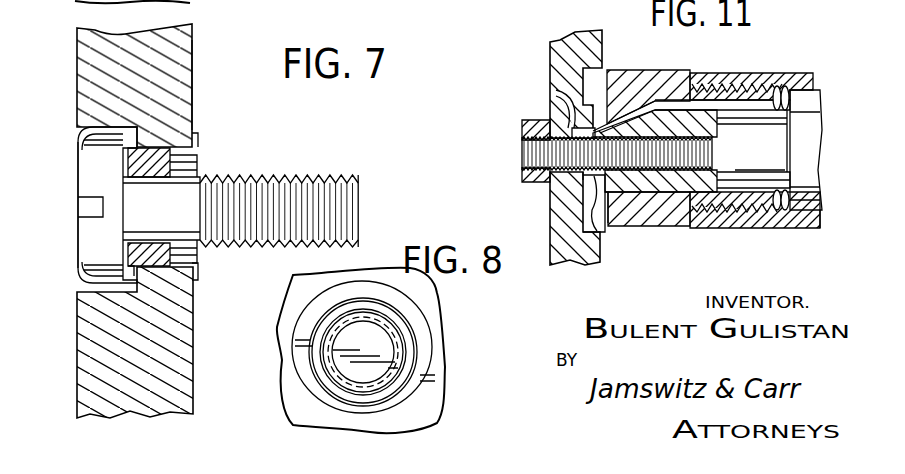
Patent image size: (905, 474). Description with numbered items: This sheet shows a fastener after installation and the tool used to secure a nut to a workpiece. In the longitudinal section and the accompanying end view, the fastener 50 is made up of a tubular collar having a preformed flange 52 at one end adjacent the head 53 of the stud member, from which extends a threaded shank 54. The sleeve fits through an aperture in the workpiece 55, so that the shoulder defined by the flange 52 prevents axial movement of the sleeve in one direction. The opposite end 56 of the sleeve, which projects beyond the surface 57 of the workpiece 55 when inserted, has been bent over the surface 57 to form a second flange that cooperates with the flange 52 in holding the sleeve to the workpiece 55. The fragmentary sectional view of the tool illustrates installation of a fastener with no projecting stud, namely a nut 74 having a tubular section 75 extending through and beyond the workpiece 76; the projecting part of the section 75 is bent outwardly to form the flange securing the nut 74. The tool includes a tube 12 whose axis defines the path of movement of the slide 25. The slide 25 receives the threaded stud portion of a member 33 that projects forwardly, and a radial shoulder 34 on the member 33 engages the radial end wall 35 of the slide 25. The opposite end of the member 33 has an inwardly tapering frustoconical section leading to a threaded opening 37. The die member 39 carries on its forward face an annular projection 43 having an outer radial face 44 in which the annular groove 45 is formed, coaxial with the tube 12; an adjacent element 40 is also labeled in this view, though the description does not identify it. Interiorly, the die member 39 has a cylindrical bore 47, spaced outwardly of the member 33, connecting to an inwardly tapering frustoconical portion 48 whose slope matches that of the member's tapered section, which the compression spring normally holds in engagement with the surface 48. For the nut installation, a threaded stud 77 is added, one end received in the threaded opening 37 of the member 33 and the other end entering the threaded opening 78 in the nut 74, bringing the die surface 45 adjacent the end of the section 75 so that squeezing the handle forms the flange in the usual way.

In FIG. 11, the tube 12 is at (822, 226).
In FIG. 11, the slide 25 is at (820, 136).
In FIG. 11, the member 33 is at (757, 192).
In FIG. 11, the radial shoulder 34 is at (790, 152).
In FIG. 11, the radial end wall 35 is at (785, 86).
In FIG. 11, the threaded opening 37 is at (717, 150).
In FIG. 11, the die member 39 is at (672, 68).
In FIG. 11, the threaded insert 40 is at (735, 76).
In FIG. 11, the annular projection 43 is at (606, 205).
In FIG. 11, the outer radial face 44 is at (585, 202).
In FIG. 11, the annular groove 45 is at (560, 92).
In FIG. 11, the cylindrical bore 47 is at (690, 200).
In FIG. 11, the frustoconical portion 48 is at (653, 196).
In FIG. 7, the fastener 50 is at (77, 243).
In FIG. 7, the preformed flange 52 is at (132, 278).
In FIG. 7, the head 53 is at (82, 165).
In FIG. 7, the threaded shank 54 is at (300, 178).
In FIG. 8, the threaded shank 54 is at (343, 340).
In FIG. 7, the workpiece 55 is at (82, 70).
In FIG. 8, the workpiece 55 is at (447, 355).
In FIG. 7, the opposite end 56 is at (198, 140).
In FIG. 8, the opposite end 56 is at (405, 338).
In FIG. 7, the surface 57 is at (193, 72).
In FIG. 8, the surface 57 is at (435, 377).
In FIG. 11, the nut 74 is at (530, 178).
In FIG. 11, the tubular section 75 is at (583, 176).
In FIG. 11, the workpiece 76 is at (565, 264).
In FIG. 11, the threaded stud 77 is at (556, 118).
In FIG. 11, the threaded opening 78 is at (522, 138).